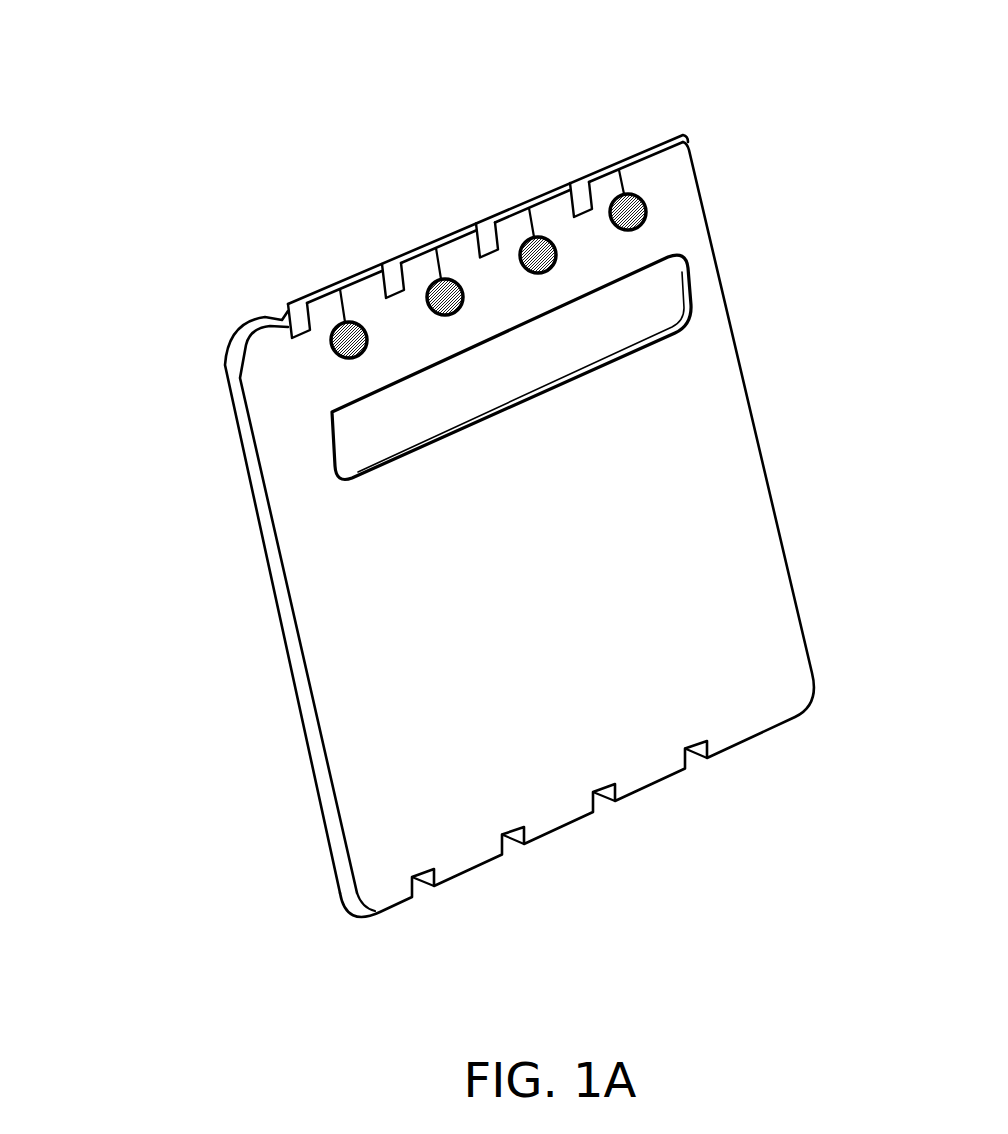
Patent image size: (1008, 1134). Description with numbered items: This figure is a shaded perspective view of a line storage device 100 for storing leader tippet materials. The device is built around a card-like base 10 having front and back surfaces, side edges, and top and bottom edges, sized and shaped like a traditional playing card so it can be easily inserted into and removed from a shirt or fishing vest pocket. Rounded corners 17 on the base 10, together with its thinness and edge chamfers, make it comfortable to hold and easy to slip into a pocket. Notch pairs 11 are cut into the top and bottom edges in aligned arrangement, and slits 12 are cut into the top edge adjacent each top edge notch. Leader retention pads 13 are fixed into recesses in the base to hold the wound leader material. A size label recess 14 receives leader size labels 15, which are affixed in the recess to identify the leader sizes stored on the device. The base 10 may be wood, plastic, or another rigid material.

The line storage device 100 is at (322, 932).
The card-like base 10 is at (307, 635).
The rounded corners 17 is at (238, 340).
The notch pairs 11 is at (288, 310).
The slits 12 is at (422, 247).
The leader retention pads 13 is at (640, 192).
The size label recess 14 is at (675, 293).
The leader size labels 15 is at (347, 437).